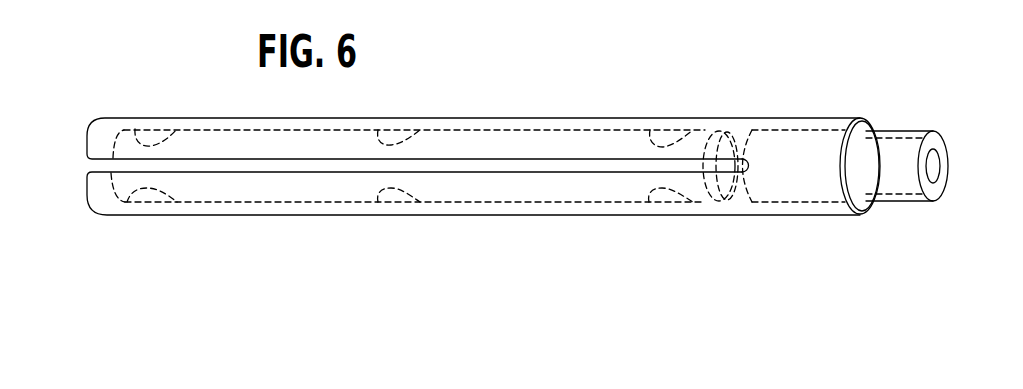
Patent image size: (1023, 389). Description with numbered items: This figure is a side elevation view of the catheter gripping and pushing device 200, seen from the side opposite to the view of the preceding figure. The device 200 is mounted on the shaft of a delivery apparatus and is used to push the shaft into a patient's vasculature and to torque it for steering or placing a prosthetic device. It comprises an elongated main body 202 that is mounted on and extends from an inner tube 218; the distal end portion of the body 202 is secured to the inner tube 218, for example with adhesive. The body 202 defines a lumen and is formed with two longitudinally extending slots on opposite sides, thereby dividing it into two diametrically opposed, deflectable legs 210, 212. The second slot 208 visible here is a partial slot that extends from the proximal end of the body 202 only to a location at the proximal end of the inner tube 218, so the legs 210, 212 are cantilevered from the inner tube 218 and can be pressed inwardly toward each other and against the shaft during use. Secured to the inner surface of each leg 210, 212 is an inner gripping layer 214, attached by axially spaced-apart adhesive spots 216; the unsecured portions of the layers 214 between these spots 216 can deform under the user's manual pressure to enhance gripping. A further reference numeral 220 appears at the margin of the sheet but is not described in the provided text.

The catheter gripping and pushing device 200 is at (770, 232).
The elongated main body 202 is at (737, 118).
The second longitudinally extending slot 208 is at (540, 168).
The leg 210 is at (200, 118).
The leg 212 is at (225, 216).
The inner gripping layer 214 is at (483, 142).
The adhesive spots 216 is at (148, 141).
The inner tube 218 is at (891, 153).
The connector 220 is at (950, 5).